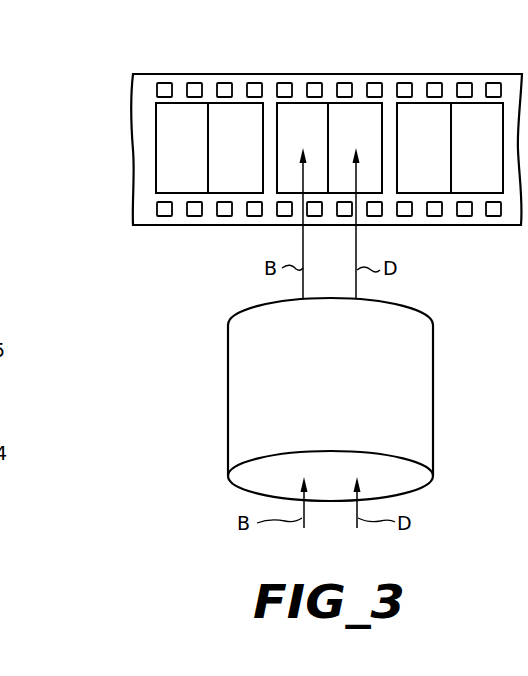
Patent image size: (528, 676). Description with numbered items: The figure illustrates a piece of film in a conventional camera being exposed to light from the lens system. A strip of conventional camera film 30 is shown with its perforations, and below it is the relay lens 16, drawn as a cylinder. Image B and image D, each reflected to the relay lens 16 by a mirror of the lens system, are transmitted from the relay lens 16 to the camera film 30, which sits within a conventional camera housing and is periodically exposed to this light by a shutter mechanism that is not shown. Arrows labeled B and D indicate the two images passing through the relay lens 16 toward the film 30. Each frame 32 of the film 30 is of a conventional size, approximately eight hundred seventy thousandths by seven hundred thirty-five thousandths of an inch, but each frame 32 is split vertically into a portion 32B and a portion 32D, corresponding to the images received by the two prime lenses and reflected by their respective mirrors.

The camera film 30 is at (173, 233).
The frame 32 is at (237, 194).
The portion 32B is at (186, 122).
The portion 32D is at (238, 118).
The relay lens 16 is at (403, 335).